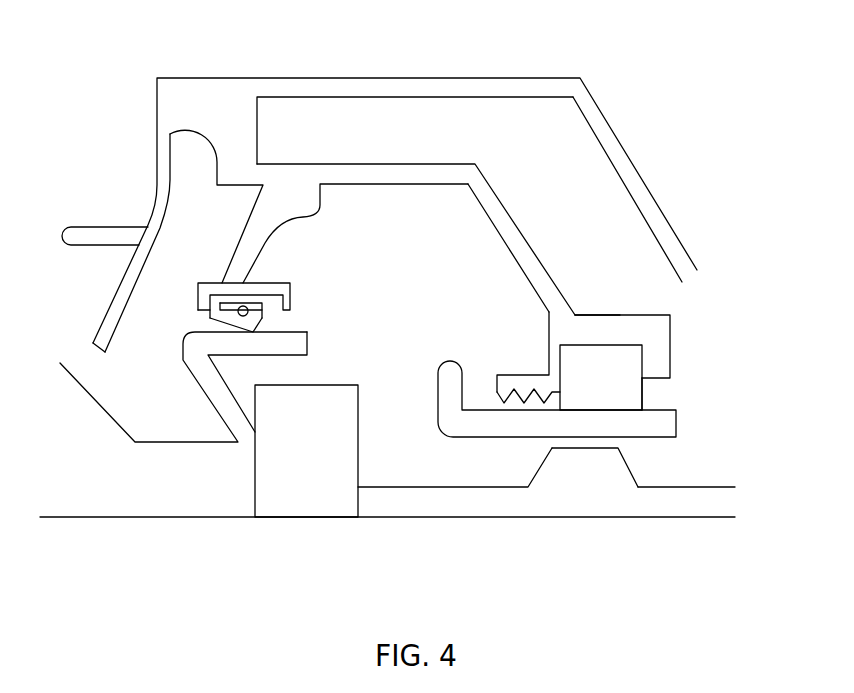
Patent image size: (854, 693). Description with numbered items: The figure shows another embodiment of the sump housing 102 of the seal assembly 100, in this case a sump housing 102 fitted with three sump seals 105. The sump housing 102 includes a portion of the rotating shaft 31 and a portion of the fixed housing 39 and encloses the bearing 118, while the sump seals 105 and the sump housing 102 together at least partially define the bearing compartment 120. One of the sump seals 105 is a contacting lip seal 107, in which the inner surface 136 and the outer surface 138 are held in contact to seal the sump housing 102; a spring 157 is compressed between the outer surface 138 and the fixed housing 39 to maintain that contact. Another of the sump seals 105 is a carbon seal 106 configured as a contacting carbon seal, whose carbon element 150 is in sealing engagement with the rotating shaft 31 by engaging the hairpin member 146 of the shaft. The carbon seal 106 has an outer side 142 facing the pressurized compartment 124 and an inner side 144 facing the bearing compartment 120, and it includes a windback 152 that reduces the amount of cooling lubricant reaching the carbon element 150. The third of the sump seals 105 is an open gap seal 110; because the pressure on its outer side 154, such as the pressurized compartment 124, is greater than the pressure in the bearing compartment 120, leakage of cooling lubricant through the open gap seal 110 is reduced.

The seal assembly 100 is at (110, 159).
The sump housing 102 is at (300, 137).
The sump seals 105 is at (237, 252).
The carbon seal 106 is at (597, 323).
The contacting lip seal 107 is at (230, 297).
The open gap seal 110 is at (622, 477).
The bearing 118 is at (283, 497).
The bearing compartment 120 is at (358, 212).
The pressurized compartment 124 is at (185, 233).
The inner surface 136 is at (292, 345).
The outer surface 138 is at (212, 321).
The outer side 142 is at (652, 312).
The inner side 144 is at (545, 345).
The hairpin member 146 is at (677, 422).
The carbon element 150 is at (627, 378).
The windback 152 is at (497, 388).
The outer side 154 is at (693, 472).
The spring 157 is at (246, 307).
The rotating shaft 31 is at (438, 500).
The fixed housing 39 is at (433, 172).